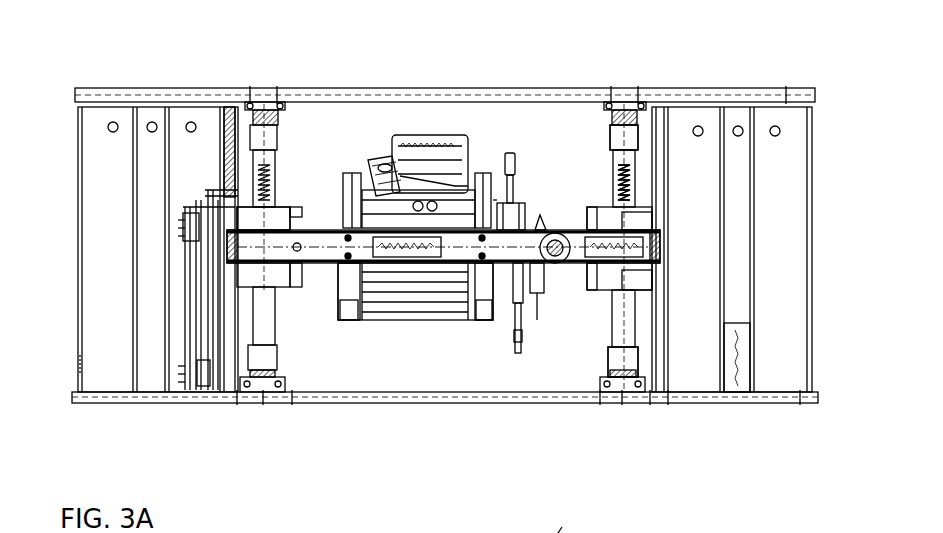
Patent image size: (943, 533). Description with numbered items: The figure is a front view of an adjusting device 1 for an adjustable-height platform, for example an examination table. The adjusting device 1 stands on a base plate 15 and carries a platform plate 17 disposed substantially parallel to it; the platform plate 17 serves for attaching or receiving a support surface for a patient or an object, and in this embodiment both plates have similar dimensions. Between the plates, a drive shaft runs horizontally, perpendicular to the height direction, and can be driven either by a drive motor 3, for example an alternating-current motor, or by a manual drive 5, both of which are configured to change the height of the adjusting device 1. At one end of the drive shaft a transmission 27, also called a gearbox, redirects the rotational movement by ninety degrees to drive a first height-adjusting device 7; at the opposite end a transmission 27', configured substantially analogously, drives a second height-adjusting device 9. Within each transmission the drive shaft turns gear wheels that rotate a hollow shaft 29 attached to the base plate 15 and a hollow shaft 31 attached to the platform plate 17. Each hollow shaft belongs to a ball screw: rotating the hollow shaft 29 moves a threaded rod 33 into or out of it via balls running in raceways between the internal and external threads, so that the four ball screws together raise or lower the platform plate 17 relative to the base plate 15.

The adjusting device 1 is at (502, 51).
The drive motor 3 is at (432, 145).
The manual drive 5 is at (555, 263).
The height-adjusting device 7 is at (640, 220).
The second height-adjusting device 9 is at (245, 218).
The base plate 15 is at (405, 397).
The platform plate 17 is at (415, 96).
The transmission 27 is at (655, 296).
The transmission 27' is at (157, 247).
The hollow shaft 29 is at (622, 355).
The hollow shaft 31 is at (615, 143).
The threaded rod 33 is at (632, 190).